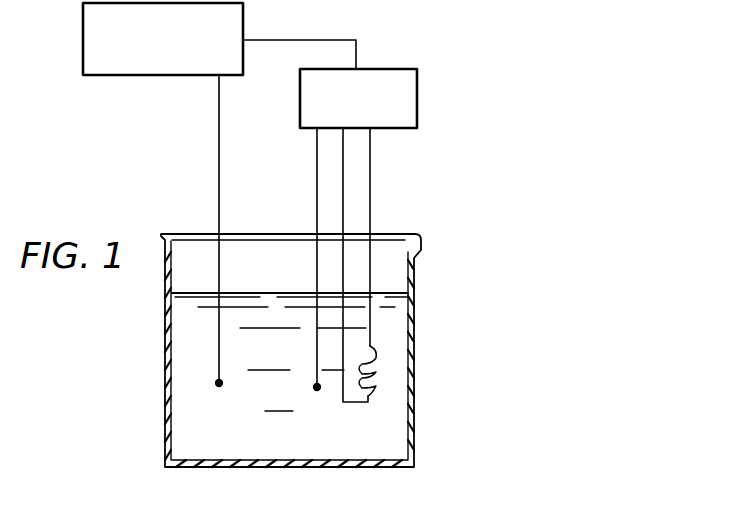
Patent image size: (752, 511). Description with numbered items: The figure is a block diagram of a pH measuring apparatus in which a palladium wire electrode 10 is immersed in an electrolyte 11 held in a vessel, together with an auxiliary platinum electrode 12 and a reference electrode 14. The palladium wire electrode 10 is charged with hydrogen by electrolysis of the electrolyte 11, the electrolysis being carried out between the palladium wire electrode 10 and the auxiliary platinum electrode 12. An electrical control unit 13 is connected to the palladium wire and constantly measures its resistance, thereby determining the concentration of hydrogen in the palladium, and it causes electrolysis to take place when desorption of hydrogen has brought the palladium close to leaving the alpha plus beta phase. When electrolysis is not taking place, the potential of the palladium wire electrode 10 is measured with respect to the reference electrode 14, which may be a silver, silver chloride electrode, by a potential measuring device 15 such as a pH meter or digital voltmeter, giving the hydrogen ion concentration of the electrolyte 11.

The palladium wire electrode 10 is at (380, 364).
The electrolyte 11 is at (188, 409).
The auxiliary platinum electrode 12 is at (311, 350).
The electrical control unit 13 is at (418, 100).
The reference electrode 14 is at (220, 352).
The potential measuring device 15 is at (160, 76).